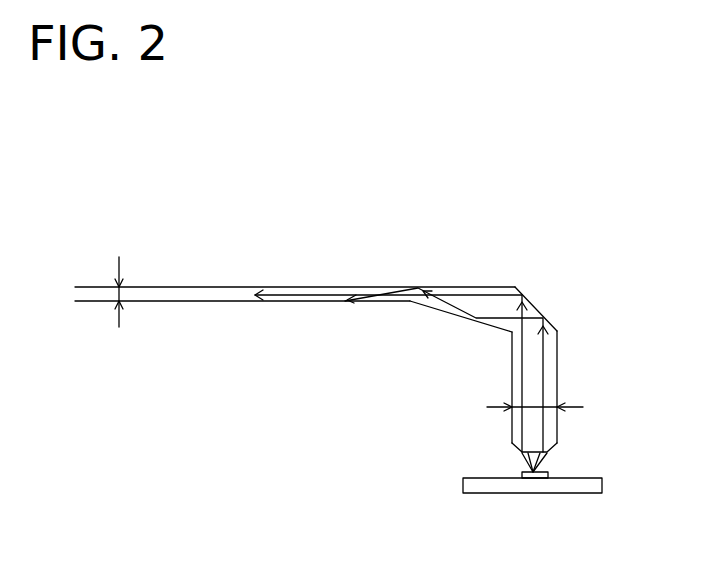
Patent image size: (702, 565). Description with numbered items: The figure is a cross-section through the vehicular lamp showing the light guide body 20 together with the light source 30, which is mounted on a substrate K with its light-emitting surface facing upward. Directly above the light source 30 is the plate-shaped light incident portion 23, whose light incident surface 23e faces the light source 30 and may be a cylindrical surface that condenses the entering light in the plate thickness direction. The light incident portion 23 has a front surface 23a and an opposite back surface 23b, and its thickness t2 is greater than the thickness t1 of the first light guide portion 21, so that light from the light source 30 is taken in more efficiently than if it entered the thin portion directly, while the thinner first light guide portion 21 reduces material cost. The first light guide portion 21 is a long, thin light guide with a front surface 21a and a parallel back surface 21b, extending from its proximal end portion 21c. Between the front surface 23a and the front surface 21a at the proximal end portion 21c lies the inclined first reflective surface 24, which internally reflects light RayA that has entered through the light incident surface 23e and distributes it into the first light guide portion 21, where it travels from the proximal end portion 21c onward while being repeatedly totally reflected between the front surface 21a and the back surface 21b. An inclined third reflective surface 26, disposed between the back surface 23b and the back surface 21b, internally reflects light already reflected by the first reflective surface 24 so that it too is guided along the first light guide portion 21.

The light guide body 20 is at (343, 210).
The first light guide portion 21 is at (347, 287).
The front surface 21a is at (196, 287).
The back surface 21b is at (197, 301).
The proximal end portion 21c is at (513, 257).
The light incident portion 23 is at (557, 357).
The front surface 23a is at (557, 382).
The back surface 23b is at (512, 384).
The light incident surface 23e is at (548, 454).
The first reflective surface 24 is at (538, 310).
The third reflective surface 26 is at (457, 318).
The light source 30 is at (538, 494).
The substrate K is at (602, 486).
The light RayA is at (464, 288).
The thickness of the first light guide portion t1 is at (118, 278).
The thickness of the light incident portion t2 is at (554, 409).